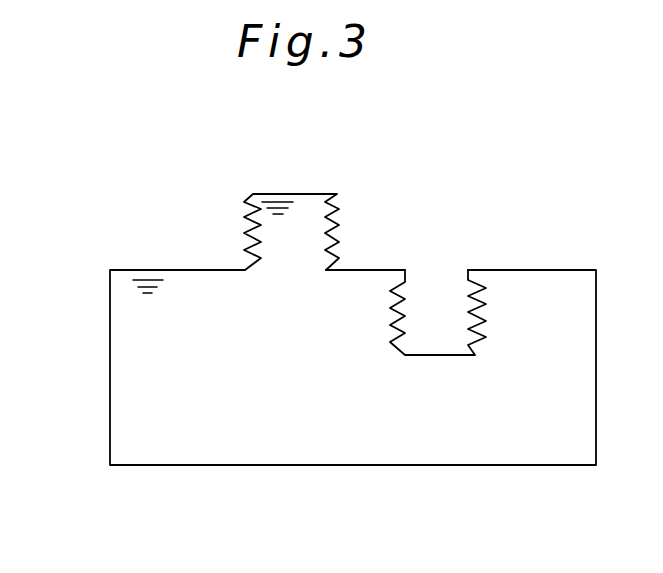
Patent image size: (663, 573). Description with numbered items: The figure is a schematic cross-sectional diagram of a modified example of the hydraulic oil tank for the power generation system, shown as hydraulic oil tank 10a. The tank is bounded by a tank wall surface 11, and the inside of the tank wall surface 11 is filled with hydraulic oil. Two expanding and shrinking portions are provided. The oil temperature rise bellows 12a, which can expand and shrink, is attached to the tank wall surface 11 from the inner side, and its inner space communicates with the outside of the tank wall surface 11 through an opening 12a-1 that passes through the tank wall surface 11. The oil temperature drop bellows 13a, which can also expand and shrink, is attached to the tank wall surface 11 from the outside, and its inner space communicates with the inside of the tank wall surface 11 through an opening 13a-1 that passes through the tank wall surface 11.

The hydraulic oil tank 10a is at (124, 196).
The tank wall surface 11 is at (110, 437).
The oil temperature rise bellows 12a is at (439, 357).
The opening 12a-1 is at (436, 258).
The oil temperature drop bellows 13a is at (290, 194).
The opening 13a-1 is at (301, 283).